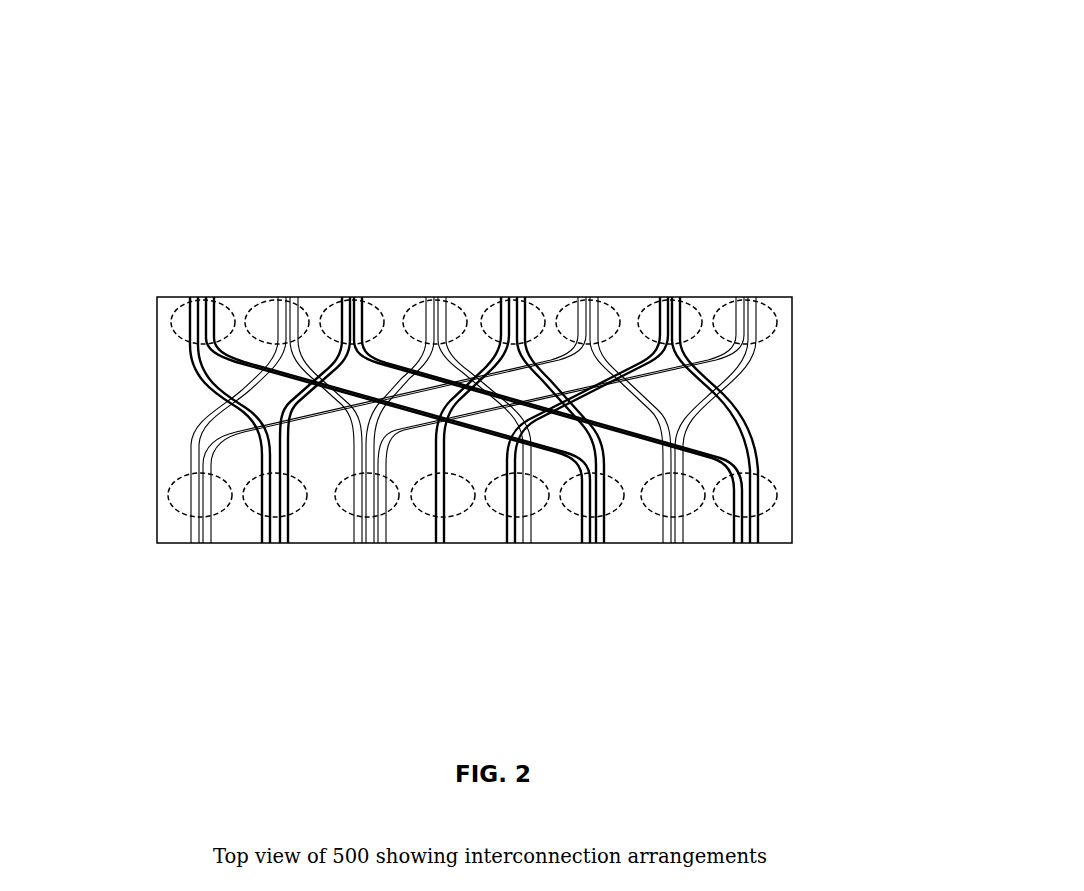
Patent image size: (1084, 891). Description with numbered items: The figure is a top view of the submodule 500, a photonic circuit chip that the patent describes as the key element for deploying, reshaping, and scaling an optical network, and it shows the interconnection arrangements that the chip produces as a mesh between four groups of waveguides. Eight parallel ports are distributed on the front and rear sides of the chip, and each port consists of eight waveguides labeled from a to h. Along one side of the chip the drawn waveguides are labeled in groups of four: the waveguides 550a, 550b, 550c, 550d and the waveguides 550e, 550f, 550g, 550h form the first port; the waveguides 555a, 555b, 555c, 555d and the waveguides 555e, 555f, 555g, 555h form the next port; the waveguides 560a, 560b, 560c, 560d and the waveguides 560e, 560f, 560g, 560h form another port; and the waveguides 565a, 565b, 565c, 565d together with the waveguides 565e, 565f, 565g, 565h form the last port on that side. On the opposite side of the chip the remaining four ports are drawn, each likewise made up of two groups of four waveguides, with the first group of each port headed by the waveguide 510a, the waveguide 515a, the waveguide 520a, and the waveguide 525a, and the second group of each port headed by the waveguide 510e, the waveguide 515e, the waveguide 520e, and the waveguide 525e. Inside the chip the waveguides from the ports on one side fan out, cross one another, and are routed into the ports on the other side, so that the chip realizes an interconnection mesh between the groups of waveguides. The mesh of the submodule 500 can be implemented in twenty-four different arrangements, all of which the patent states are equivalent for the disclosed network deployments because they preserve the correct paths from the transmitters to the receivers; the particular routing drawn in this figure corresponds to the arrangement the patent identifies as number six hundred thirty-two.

The submodule 500 is at (167, 556).
The waveguide of port 550 550a is at (199, 293).
The waveguide of port 550 550b is at (234, 420).
The waveguide of port 550 550c is at (394, 420).
The waveguide of port 550 550d is at (402, 420).
The waveguide of port 550 550e is at (266, 300).
The waveguide of port 550 550f is at (242, 420).
The waveguide of port 550 550g is at (322, 420).
The waveguide of port 550 550h is at (330, 420).
The waveguide of port 555 555a is at (365, 293).
The waveguide of port 555 555b is at (319, 420).
The waveguide of port 555 555c is at (544, 420).
The waveguide of port 555 555d is at (552, 420).
The waveguide of port 555 555e is at (426, 293).
The waveguide of port 555 555f is at (404, 420).
The waveguide of port 555 555g is at (480, 420).
The waveguide of port 555 555h is at (488, 420).
The waveguide of port 560 560a is at (510, 300).
The waveguide of port 560 560b is at (476, 420).
The waveguide of port 560 560c is at (556, 420).
The waveguide of port 560 560d is at (564, 420).
The waveguide of port 560 560e is at (584, 293).
The waveguide of port 560 560f is at (398, 420).
The waveguide of port 560 560g is at (626, 420).
The waveguide of port 560 560h is at (634, 420).
The waveguide of port 565 565a is at (671, 293).
The waveguide of port 565 565b is at (719, 420).
The waveguide of port 565 565c is at (583, 420).
The waveguide of port 565 565d is at (591, 420).
The waveguide of port 565 565e is at (763, 293).
The waveguide of port 565 565f is at (565, 420).
The waveguide of port 565 565g is at (711, 420).
The waveguide of port 565 565h is at (719, 420).
The waveguide of port 510 510a is at (197, 548).
The waveguide of port 510 510e is at (275, 548).
The waveguide of port 515 515a is at (365, 548).
The waveguide of port 515 515e is at (440, 548).
The waveguide of port 520 520a is at (516, 548).
The waveguide of port 520 520e is at (590, 548).
The waveguide of port 525 525a is at (673, 550).
The waveguide of port 525 525e is at (745, 550).